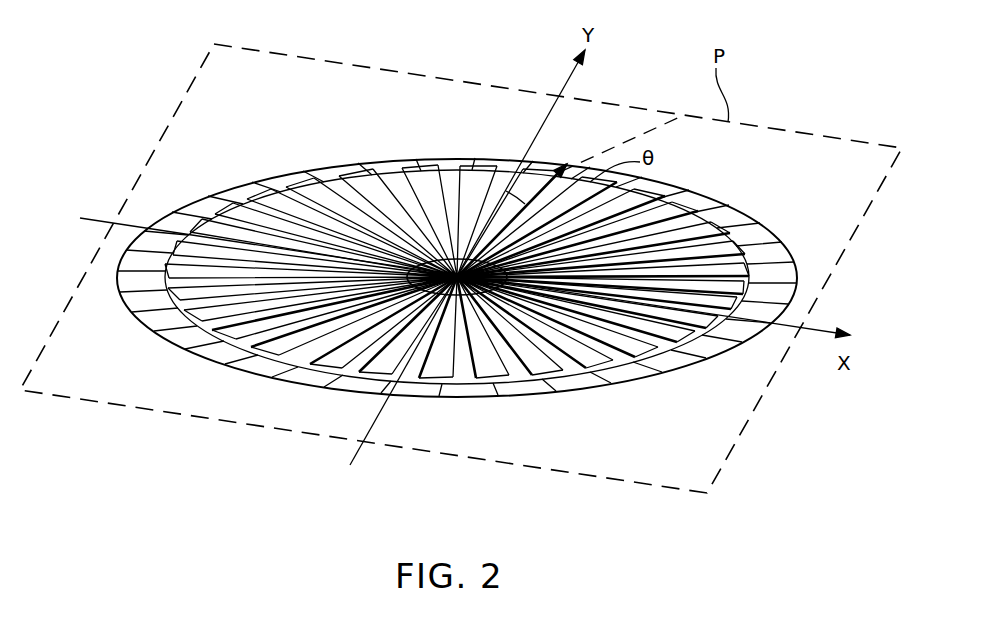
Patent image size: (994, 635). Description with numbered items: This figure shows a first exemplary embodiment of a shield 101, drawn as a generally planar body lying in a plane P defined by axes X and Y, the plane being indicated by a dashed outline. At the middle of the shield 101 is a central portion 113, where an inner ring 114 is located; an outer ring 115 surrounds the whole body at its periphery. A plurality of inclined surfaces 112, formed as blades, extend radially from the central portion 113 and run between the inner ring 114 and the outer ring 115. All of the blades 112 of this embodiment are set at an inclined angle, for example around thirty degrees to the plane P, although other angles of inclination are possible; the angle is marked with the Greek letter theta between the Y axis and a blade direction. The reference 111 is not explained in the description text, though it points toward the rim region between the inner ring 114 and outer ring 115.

The shield 101 is at (300, 162).
The ring segments 111 is at (652, 340).
The inclined surfaces 112 is at (282, 343).
The central portion 113 is at (440, 262).
The inner ring 114 is at (484, 387).
The outer ring 115 is at (690, 205).